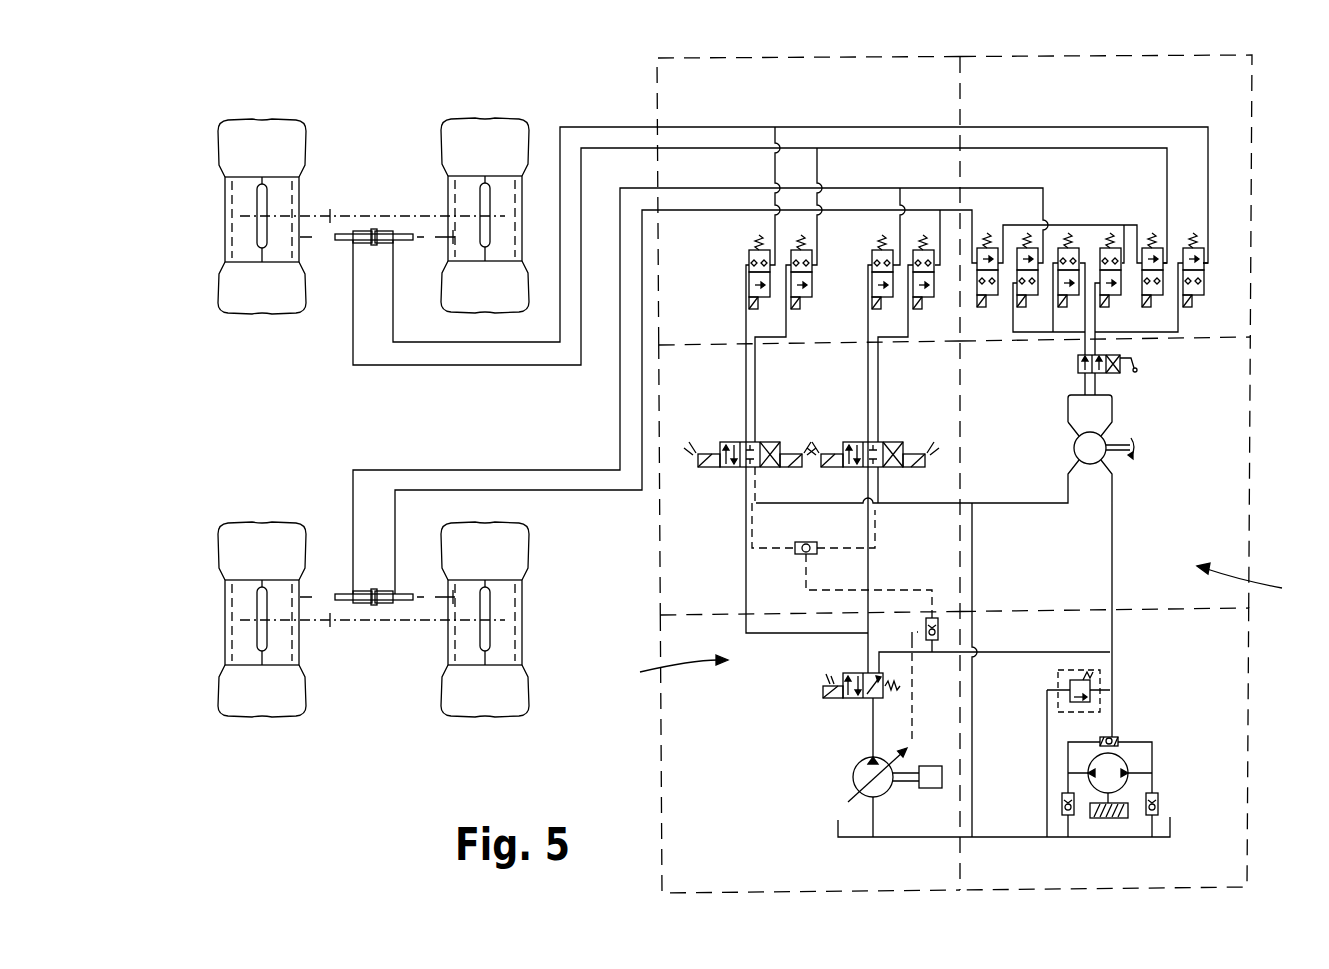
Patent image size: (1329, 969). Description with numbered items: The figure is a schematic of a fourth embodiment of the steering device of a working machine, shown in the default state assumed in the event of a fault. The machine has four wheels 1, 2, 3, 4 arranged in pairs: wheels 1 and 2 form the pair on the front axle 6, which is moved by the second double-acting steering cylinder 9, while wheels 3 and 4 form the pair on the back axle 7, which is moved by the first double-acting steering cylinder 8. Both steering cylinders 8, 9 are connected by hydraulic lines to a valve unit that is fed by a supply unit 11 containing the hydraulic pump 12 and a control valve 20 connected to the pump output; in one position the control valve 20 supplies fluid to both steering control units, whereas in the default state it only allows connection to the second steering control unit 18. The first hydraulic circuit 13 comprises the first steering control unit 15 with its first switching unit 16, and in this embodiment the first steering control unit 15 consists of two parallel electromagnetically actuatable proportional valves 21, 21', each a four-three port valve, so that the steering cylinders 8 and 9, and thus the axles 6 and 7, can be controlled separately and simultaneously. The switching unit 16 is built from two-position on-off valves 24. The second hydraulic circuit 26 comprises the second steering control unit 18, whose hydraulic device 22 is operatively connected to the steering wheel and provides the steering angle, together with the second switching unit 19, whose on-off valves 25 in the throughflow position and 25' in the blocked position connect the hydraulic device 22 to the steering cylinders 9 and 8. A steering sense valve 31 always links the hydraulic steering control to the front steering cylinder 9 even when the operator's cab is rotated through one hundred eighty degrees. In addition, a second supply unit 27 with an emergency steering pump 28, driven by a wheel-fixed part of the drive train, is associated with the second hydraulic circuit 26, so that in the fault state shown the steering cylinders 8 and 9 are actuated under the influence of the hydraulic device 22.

The wheel 1 is at (222, 218).
The wheel 2 is at (443, 198).
The wheel 3 is at (222, 617).
The wheel 4 is at (446, 648).
The front axle 6 is at (326, 214).
The second double-acting steering cylinder 9 is at (378, 237).
The back axle 7 is at (332, 622).
The first double-acting steering cylinder 8 is at (391, 600).
The supply unit 11 is at (658, 708).
The hydraulic pump 12 is at (853, 775).
The first hydraulic circuit 13 is at (663, 667).
The first steering control unit 15 is at (658, 563).
The first switching unit 16 is at (658, 86).
The second steering control unit 18 is at (1252, 457).
The second switching unit 19 is at (1252, 143).
The control valve 20 is at (848, 698).
The flow control valve 21 is at (808, 500).
The proportional valve 21' is at (873, 443).
The hydraulic device 22 is at (1107, 457).
The on-off valve 24 is at (749, 262).
The first on-off valve 25 is at (1088, 259).
The further on-off valve 25' is at (1128, 307).
The second hydraulic circuit 26 is at (1258, 583).
The second supply unit 27 is at (1252, 692).
The emergency steering pump 28 is at (1122, 757).
The steering sense valve 31 is at (1115, 376).